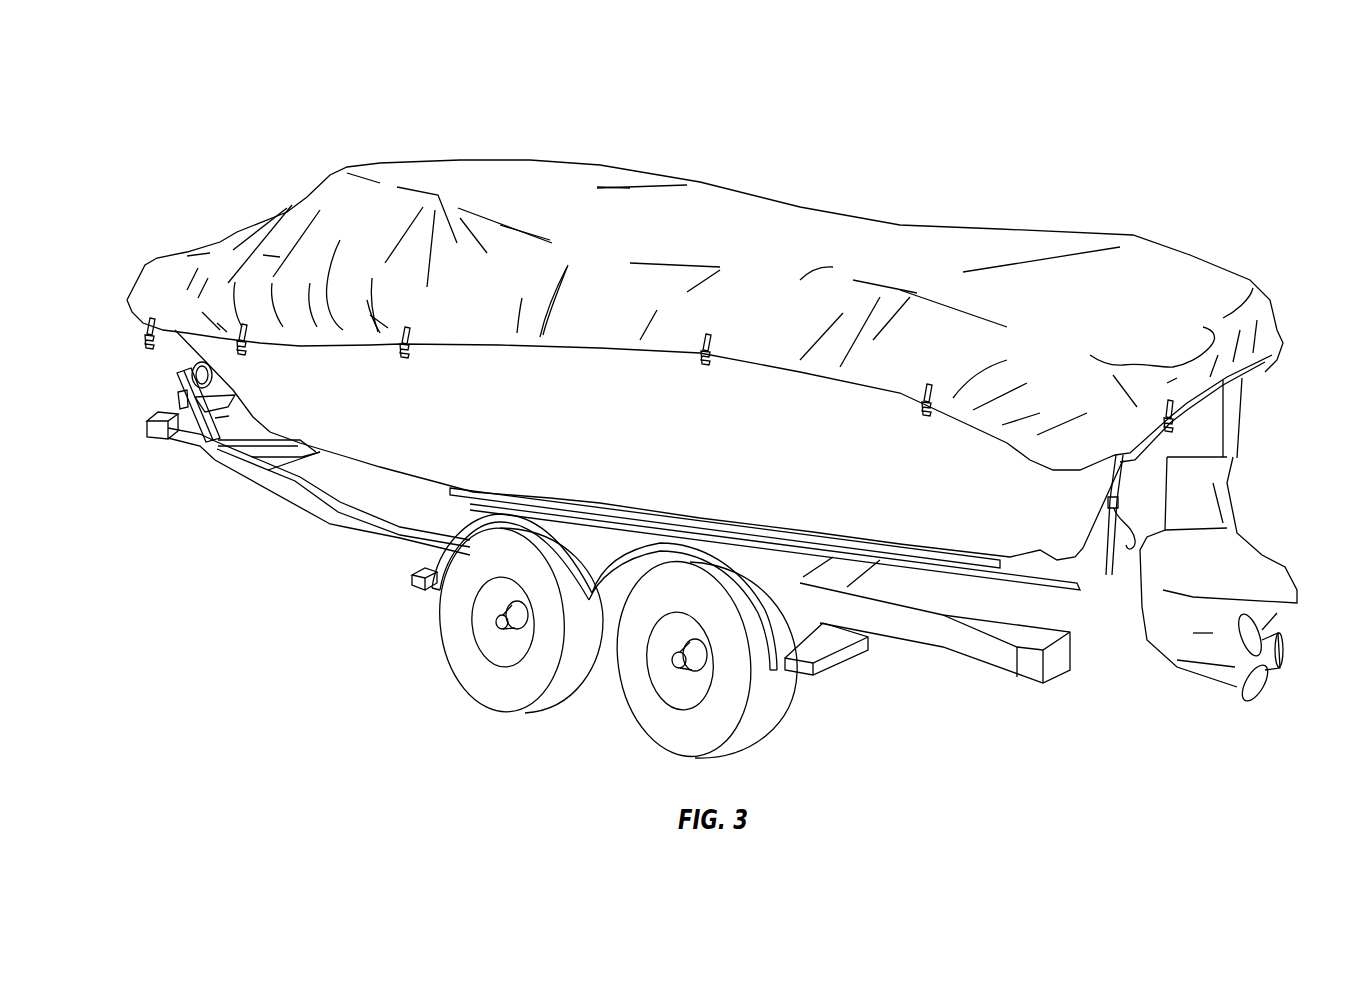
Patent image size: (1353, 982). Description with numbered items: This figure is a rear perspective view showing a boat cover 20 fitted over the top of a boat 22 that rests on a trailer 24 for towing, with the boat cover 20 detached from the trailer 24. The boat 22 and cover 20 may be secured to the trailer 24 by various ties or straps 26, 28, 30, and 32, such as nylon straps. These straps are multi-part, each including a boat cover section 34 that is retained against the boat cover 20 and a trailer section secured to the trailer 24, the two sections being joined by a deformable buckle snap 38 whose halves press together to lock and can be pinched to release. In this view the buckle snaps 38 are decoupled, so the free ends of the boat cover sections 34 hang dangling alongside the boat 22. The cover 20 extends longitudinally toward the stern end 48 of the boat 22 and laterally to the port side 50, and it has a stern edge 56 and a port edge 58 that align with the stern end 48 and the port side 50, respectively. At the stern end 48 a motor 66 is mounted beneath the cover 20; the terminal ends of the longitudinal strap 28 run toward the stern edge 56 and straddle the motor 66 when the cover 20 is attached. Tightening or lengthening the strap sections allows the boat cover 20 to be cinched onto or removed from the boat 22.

The boat cover 20 is at (649, 109).
The boat 22 is at (383, 453).
The trailer 24 is at (273, 493).
The strap 26 is at (405, 367).
The longitudinal strap 28 is at (1105, 567).
The strap 30 is at (143, 347).
The strap 32 is at (243, 358).
The boat cover section 34 is at (925, 387).
The deformable buckle snap 38 is at (930, 420).
The stern end 48 is at (1142, 512).
The port side 50 is at (620, 447).
The stern edge 56 is at (1230, 377).
The port edge 58 is at (522, 348).
The motor 66 is at (1217, 510).